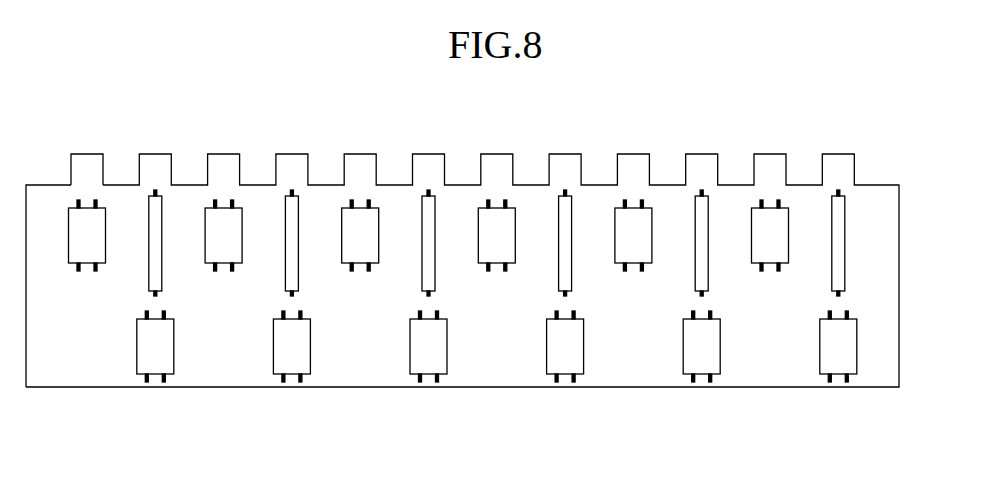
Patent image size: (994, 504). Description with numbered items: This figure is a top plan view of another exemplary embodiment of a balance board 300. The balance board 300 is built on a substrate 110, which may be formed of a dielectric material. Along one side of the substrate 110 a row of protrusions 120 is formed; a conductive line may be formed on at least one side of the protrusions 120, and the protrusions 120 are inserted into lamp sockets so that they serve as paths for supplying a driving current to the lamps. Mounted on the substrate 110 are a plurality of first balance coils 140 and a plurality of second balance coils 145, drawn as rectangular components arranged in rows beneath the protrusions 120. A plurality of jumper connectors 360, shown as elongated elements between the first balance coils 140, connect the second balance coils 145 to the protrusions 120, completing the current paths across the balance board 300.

The substrate 110 is at (882, 358).
The protrusions 120 is at (86, 157).
The first balance coils 140 is at (88, 253).
The second balance coils 145 is at (159, 347).
The balance board 300 is at (462, 282).
The jumper connectors 360 is at (151, 196).